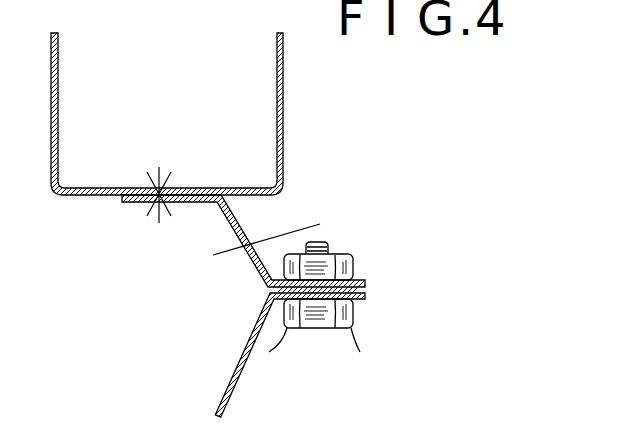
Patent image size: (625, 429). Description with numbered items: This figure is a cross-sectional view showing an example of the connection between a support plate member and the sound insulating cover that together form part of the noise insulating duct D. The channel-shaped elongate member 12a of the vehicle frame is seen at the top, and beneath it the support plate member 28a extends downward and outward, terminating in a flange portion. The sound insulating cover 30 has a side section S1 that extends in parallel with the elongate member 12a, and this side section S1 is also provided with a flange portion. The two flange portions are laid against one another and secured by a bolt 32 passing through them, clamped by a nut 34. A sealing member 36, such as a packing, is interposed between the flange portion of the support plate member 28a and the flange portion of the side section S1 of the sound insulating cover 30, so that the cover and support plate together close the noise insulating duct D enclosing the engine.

The elongate member 12a is at (283, 93).
The support plate member 28a is at (245, 234).
The noise insulating duct D is at (277, 231).
The nut 34 is at (353, 262).
The sealing member 36 is at (276, 290).
The sound insulating cover 30 is at (228, 386).
The side section S1 is at (271, 306).
The bolt 32 is at (353, 333).